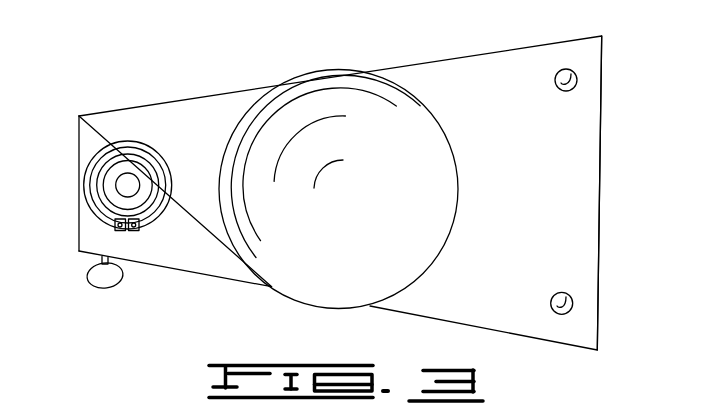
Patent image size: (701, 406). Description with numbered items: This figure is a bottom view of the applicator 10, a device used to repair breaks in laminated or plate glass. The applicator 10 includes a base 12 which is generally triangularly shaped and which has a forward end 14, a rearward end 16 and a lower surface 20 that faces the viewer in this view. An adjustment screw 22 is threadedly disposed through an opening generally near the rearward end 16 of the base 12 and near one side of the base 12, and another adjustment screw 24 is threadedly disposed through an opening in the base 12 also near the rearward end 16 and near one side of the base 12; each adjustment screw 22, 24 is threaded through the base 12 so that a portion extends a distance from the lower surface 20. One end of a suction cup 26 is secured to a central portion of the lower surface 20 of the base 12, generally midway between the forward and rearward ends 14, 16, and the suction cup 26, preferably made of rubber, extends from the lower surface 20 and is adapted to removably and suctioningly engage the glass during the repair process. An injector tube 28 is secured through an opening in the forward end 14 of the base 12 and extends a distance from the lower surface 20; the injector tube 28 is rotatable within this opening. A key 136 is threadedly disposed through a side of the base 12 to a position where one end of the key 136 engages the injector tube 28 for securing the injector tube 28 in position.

The applicator 10 is at (431, 52).
The base 12 is at (198, 110).
The forward end 14 is at (79, 133).
The rearward end 16 is at (603, 105).
The lower surface 20 is at (413, 80).
The adjustment screw 22 is at (570, 300).
The adjustment screw 24 is at (568, 78).
The suction cup 26 is at (458, 183).
The injector tube 28 is at (87, 183).
The key 136 is at (98, 275).